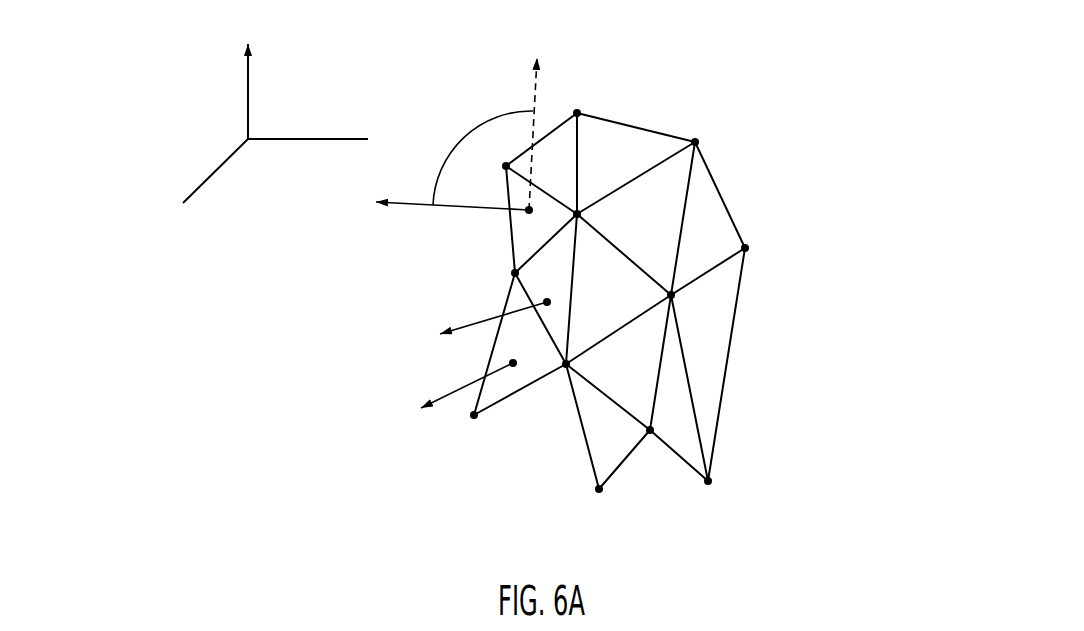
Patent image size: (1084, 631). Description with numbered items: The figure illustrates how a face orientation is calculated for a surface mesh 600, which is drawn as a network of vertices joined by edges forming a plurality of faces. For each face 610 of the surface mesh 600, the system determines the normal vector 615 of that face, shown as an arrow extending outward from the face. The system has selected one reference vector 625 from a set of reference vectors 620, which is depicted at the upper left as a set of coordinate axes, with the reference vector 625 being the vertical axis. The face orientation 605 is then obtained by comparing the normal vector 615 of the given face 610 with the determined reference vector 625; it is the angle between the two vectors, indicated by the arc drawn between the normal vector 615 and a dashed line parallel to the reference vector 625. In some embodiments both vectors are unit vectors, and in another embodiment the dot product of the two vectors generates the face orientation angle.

The surface mesh 600 is at (840, 165).
The face orientation 605 is at (475, 132).
The face 610 is at (607, 157).
The normal vector 615 is at (453, 211).
The set of reference vectors 620 is at (150, 72).
The reference vector 625 is at (248, 85).